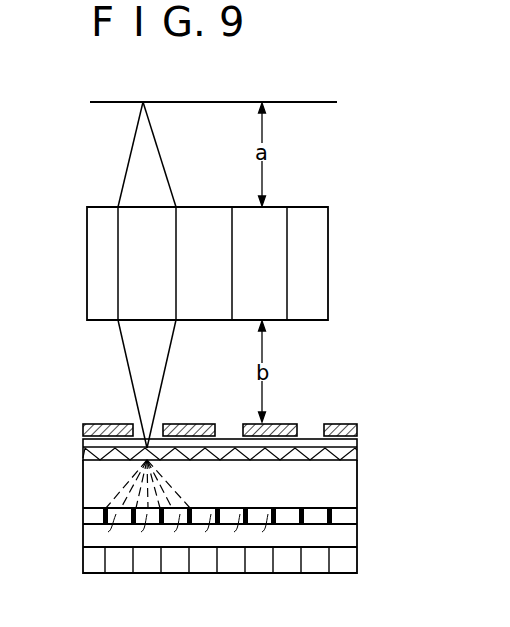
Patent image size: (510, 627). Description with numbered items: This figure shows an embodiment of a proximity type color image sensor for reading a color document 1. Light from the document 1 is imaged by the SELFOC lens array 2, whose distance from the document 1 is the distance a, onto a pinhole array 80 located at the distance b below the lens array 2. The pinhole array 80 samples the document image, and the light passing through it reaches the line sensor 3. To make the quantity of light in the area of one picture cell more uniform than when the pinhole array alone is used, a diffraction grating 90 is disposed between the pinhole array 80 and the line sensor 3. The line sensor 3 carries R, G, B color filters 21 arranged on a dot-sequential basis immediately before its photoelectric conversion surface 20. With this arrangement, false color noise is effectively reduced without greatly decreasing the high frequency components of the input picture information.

The document 1 is at (337, 102).
The SELFOC lens array 2 is at (322, 232).
The pinhole array 80 is at (344, 425).
The diffraction grating 90 is at (349, 455).
The R, G, B color filters 21 is at (350, 521).
The photoelectric conversion surface 20 is at (352, 563).
The line sensor 3 is at (266, 541).